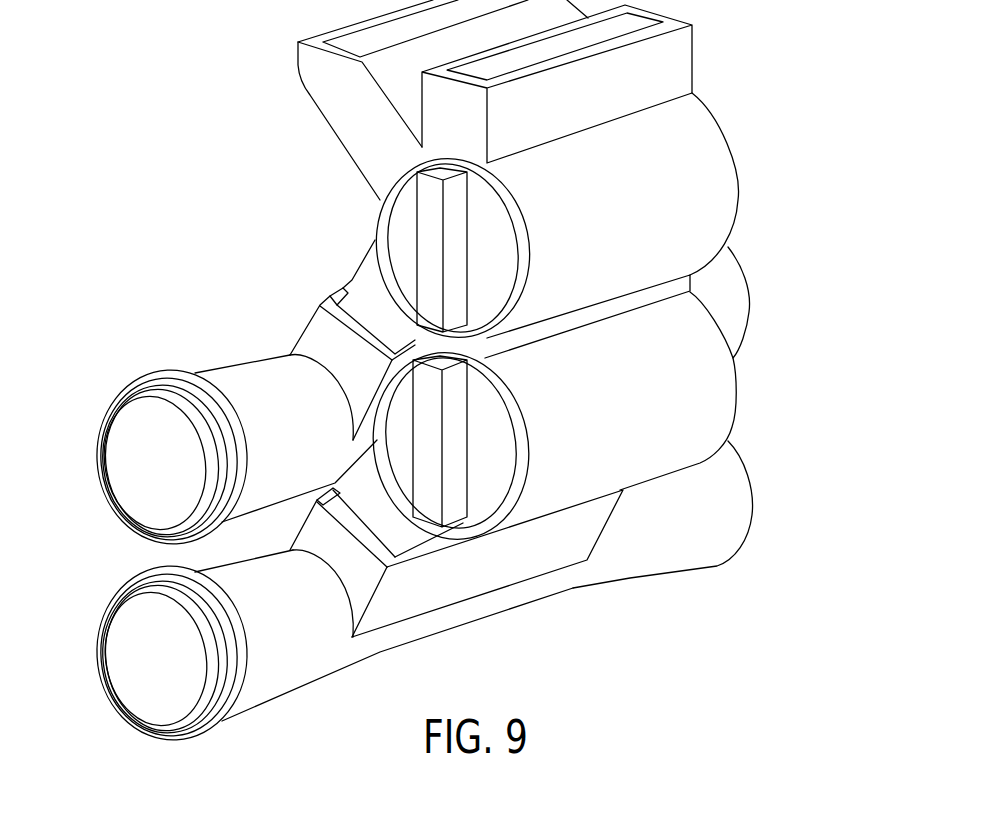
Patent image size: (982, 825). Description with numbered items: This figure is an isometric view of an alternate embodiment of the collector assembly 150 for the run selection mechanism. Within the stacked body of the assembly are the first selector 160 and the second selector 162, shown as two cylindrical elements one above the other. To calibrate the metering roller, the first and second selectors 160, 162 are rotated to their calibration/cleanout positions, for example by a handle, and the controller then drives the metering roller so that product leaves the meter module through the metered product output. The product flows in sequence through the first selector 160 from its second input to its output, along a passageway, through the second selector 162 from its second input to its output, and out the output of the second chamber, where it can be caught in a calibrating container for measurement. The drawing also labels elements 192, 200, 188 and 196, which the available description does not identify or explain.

The manifold assembly 150 is at (433, 406).
The first selector 160 is at (455, 242).
The second selector 162 is at (453, 437).
The cylindrical body portion 188 is at (738, 313).
The lower cylindrical body portion 196 is at (738, 510).
The first tube 192 is at (133, 443).
The second tube 200 is at (130, 640).